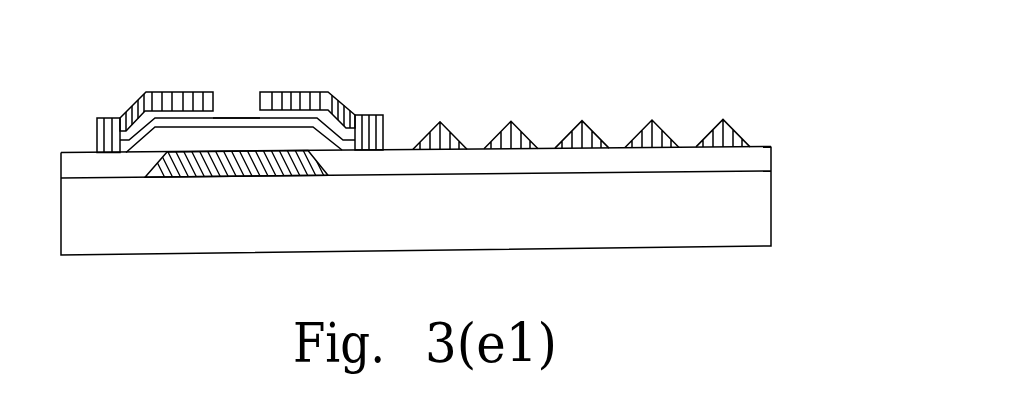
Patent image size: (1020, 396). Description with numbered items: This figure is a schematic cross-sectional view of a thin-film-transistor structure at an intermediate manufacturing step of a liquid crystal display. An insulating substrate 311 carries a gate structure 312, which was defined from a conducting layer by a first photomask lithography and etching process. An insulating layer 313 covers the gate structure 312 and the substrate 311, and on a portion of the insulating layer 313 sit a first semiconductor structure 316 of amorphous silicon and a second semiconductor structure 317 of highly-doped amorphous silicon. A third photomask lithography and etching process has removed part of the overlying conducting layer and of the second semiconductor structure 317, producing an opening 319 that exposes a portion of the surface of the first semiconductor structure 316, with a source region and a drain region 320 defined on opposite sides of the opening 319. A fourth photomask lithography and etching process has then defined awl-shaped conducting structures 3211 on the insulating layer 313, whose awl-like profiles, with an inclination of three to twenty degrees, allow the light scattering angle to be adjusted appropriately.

The insulating substrate 311 is at (722, 225).
The gate structure 312 is at (245, 178).
The insulating layer 313 is at (742, 157).
The first semiconductor structure 316 is at (309, 112).
The second semiconductor structure 317 is at (279, 108).
The opening 319 is at (231, 105).
The source region and drain region 320 is at (177, 93).
The awl-shaped conducting structures 3211 is at (720, 137).